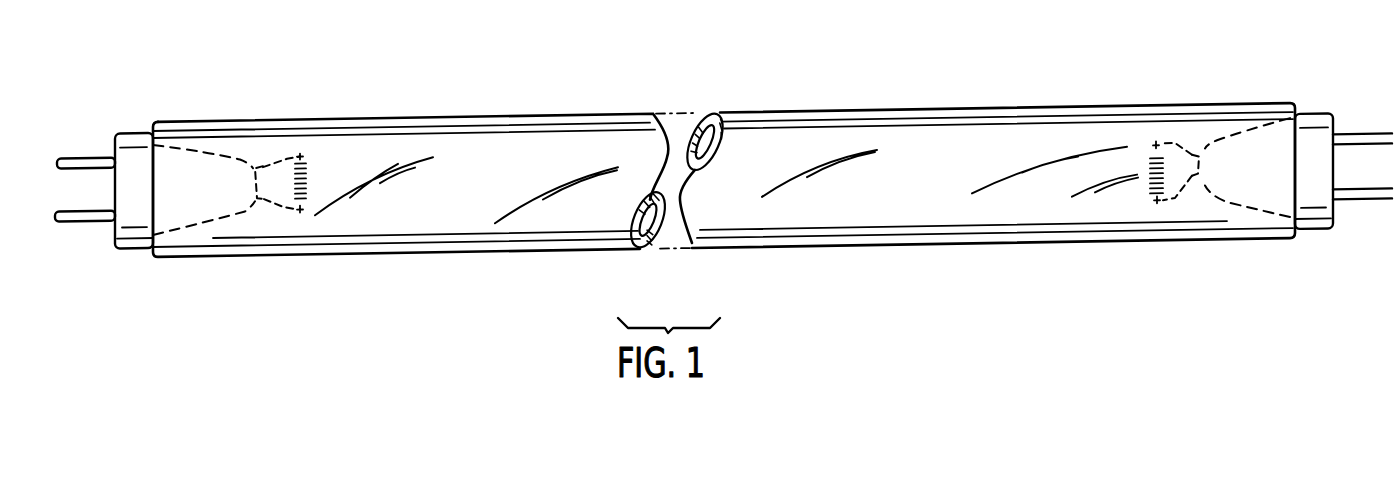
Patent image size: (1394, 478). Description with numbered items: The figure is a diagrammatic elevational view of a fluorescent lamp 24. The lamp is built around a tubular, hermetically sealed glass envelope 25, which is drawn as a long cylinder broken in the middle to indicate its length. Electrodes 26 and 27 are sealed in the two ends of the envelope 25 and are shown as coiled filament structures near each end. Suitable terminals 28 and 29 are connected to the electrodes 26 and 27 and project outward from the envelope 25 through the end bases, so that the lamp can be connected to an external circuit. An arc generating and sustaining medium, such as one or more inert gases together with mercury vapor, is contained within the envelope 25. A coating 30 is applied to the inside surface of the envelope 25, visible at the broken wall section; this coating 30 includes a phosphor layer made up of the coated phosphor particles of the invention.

The fluorescent lamp 24 is at (760, 77).
The glass envelope 25 is at (846, 111).
The electrode 26 is at (312, 152).
The electrode 27 is at (1152, 150).
The terminal 28 is at (81, 150).
The terminal 29 is at (1371, 130).
The coating 30 is at (652, 248).